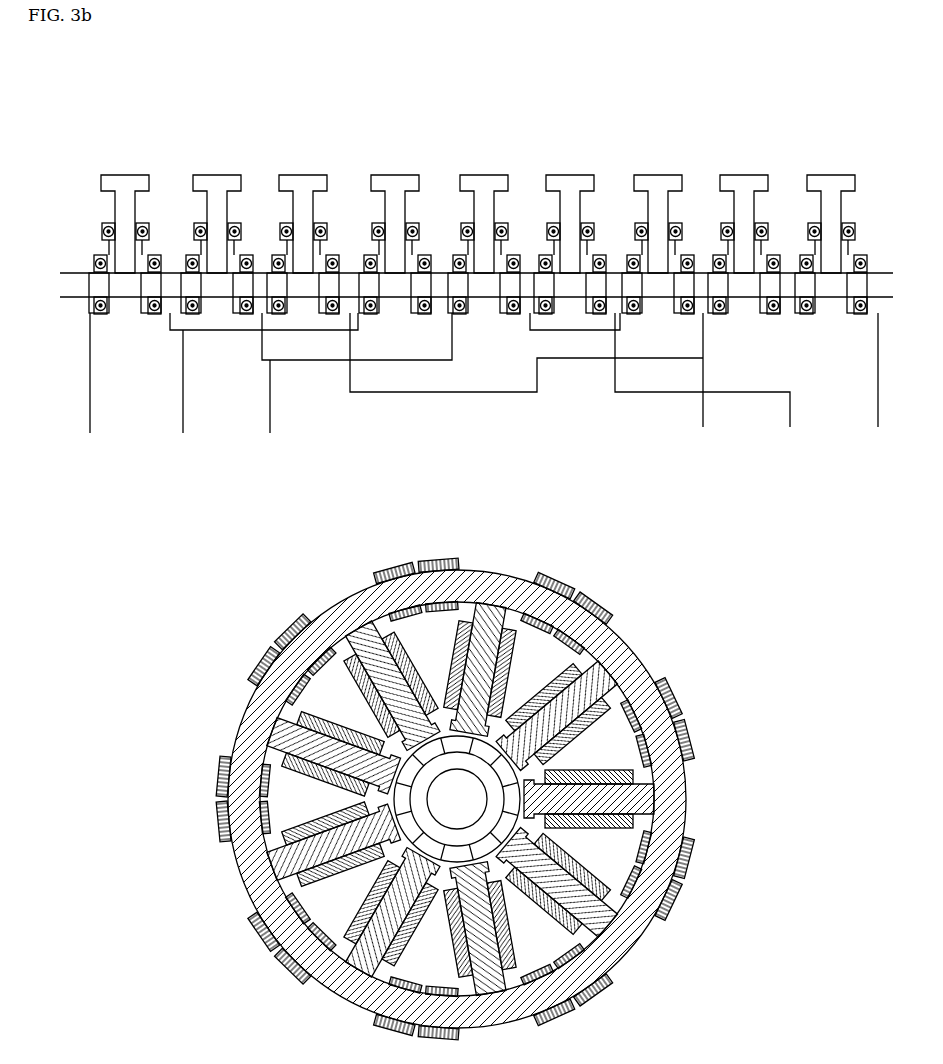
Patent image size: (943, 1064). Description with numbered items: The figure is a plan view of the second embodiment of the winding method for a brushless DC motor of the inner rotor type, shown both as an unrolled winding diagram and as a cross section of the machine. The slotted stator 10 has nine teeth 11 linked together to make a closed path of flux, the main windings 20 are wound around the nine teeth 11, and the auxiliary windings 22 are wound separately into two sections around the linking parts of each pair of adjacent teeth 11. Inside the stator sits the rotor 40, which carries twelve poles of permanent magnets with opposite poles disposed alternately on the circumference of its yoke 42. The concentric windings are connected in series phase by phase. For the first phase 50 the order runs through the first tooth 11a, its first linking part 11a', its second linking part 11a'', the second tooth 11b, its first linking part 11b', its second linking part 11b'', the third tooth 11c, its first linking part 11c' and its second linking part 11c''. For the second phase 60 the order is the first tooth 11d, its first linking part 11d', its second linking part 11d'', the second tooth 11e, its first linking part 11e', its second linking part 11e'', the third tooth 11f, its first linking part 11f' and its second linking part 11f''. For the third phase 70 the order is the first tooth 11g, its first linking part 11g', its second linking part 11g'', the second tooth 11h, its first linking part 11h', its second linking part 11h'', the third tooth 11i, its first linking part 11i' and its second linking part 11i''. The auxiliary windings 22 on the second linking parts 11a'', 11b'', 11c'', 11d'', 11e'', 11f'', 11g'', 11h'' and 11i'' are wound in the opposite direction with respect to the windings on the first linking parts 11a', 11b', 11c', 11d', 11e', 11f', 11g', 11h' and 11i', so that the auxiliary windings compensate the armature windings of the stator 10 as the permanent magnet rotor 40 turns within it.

The A1 tooth 11a is at (125, 203).
The B1 tooth 11d is at (217, 203).
The C1 tooth 11g is at (303, 203).
The A2 tooth 11b is at (395, 203).
The B2 tooth 11e is at (484, 203).
The C2 tooth 11h is at (570, 203).
The A3 tooth 11c is at (658, 203).
The B3 tooth 11f is at (744, 203).
The C3 tooth 11i is at (831, 203).
The A1' linking part 11a' is at (88, 272).
The A1" linking part 11a'' is at (145, 296).
The B1' linking part 11d' is at (180, 272).
The B1" linking part 11d'' is at (237, 296).
The C1' linking part 11g' is at (266, 272).
The C1" linking part 11g'' is at (323, 296).
The A2' linking part 11b' is at (358, 272).
The A2" linking part 11b'' is at (415, 296).
The B2' linking part 11e' is at (447, 272).
The B2" linking part 11e'' is at (504, 296).
The C2' linking part 11h' is at (533, 272).
The C2" linking part 11h'' is at (590, 296).
The A3' linking part 11c' is at (621, 272).
The A3" linking part 11c'' is at (678, 296).
The B3' linking part 11f' is at (708, 272).
The B3" linking part 11f'' is at (765, 296).
The C3' linking part 11i' is at (795, 272).
The C3" linking part 11i'' is at (852, 296).
The A phase 50 is at (90, 433).
The B phase 60 is at (183, 433).
The C phase 70 is at (270, 433).
The slotted stator 10 is at (509, 799).
The teeth 11 is at (486, 799).
The main windings 20 is at (481, 799).
The auxiliary windings 22 is at (509, 799).
The rotor 40 is at (579, 799).
The yoke 42 is at (457, 799).